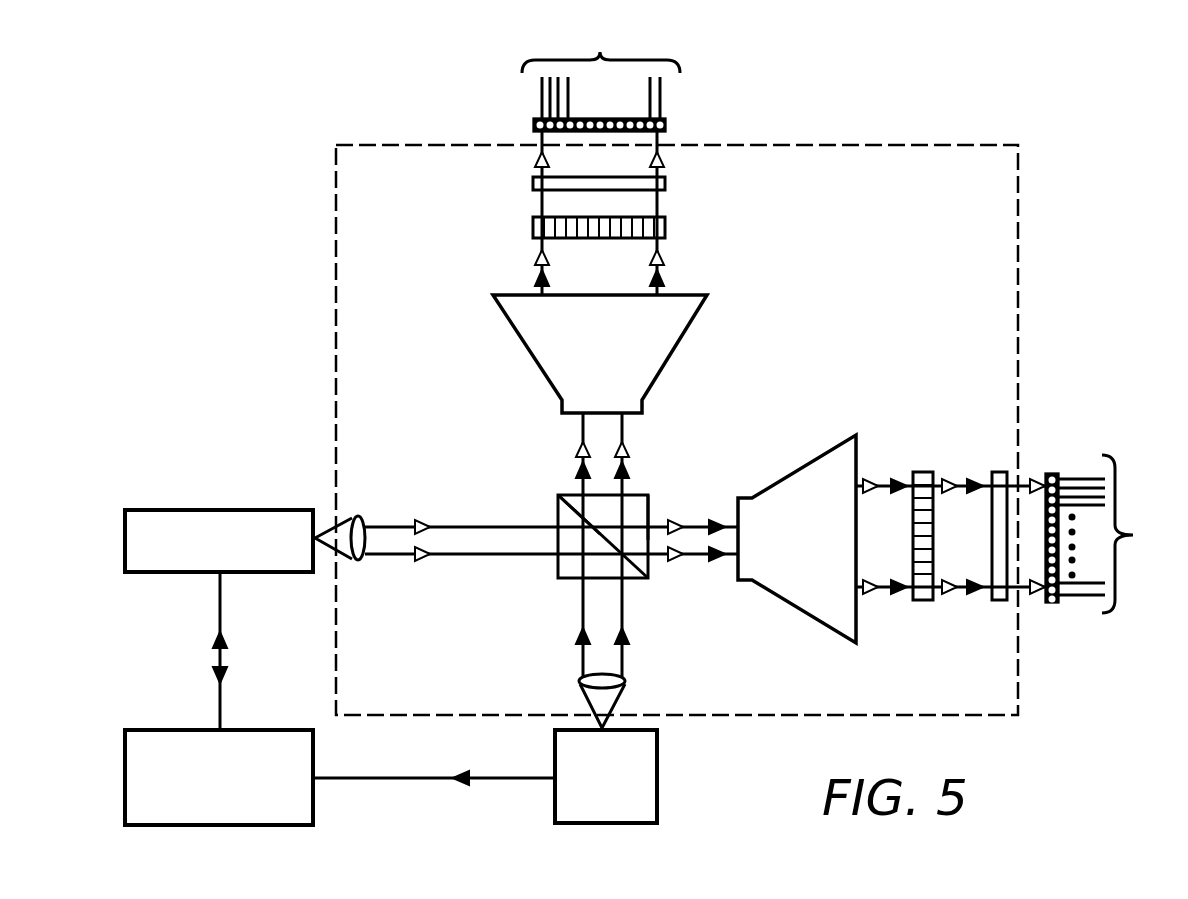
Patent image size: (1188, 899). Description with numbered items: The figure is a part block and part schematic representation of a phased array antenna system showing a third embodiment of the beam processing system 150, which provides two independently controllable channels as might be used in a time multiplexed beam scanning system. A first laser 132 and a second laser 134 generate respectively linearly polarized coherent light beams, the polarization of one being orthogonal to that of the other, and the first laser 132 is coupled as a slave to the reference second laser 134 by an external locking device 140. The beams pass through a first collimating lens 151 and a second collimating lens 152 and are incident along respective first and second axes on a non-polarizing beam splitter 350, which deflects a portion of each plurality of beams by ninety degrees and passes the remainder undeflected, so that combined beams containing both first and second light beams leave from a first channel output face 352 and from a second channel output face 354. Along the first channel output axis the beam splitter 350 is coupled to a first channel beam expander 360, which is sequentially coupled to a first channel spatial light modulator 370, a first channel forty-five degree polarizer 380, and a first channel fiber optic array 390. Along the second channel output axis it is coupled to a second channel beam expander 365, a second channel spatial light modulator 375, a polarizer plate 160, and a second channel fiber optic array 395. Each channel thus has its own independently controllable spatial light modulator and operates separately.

The first laser 132 is at (188, 510).
The second laser 134 is at (657, 753).
The external locking device 140 is at (202, 728).
The beam processing system 150 is at (748, 145).
The first collimating lens 151 is at (362, 518).
The second collimating lens 152 is at (622, 697).
The output plate 160 is at (1002, 470).
The non-polarizing beam splitter 350 is at (558, 562).
The first channel output face 352 is at (567, 497).
The second channel output face 354 is at (650, 507).
The first channel beam expander 360 is at (683, 342).
The second channel beam expander 365 is at (815, 457).
The first channel spatial light modulator 370 is at (667, 225).
The second channel spatial light modulator 375 is at (925, 470).
The first channel 45° polarizer 380 is at (667, 182).
The first channel fiber optic array 390 is at (601, 75).
The second channel fiber optic array 395 is at (1113, 534).